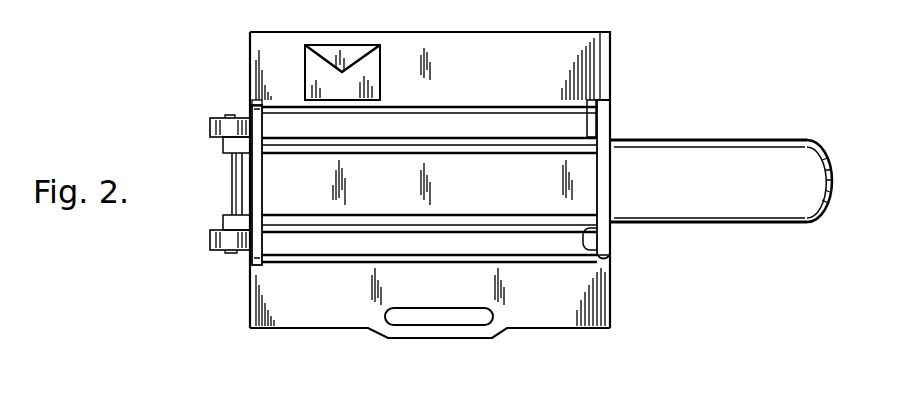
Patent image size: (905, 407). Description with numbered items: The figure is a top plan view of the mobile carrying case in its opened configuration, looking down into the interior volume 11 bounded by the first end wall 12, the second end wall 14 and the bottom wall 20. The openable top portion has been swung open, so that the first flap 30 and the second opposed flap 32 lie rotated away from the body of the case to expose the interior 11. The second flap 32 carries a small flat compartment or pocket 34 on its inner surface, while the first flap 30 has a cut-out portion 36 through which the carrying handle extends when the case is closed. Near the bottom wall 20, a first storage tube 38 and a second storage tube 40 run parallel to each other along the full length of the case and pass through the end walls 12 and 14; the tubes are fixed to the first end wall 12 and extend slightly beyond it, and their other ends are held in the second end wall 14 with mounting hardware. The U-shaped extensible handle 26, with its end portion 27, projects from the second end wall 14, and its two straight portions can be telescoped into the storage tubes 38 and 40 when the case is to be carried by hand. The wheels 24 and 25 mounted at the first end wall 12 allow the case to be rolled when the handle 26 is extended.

The interior volume 11 is at (300, 193).
The first end wall 12 is at (251, 258).
The second end wall 14 is at (612, 133).
The bottom wall 20 is at (598, 238).
The wheel 24 is at (222, 137).
The wheel 25 is at (215, 250).
The extensible handle 26 is at (668, 140).
The end portion 27 is at (818, 143).
The first flap 30 is at (310, 318).
The second opposed flap 32 is at (603, 44).
The pocket 34 is at (305, 45).
The cut-out portion 36 is at (420, 318).
The first storage tube 38 is at (578, 137).
The second storage tube 40 is at (606, 258).